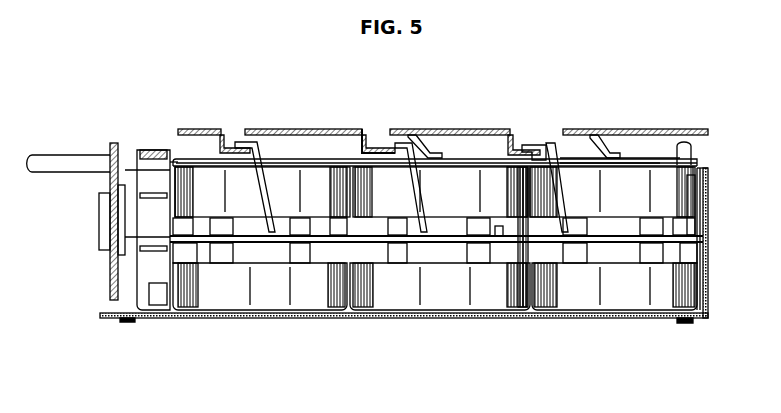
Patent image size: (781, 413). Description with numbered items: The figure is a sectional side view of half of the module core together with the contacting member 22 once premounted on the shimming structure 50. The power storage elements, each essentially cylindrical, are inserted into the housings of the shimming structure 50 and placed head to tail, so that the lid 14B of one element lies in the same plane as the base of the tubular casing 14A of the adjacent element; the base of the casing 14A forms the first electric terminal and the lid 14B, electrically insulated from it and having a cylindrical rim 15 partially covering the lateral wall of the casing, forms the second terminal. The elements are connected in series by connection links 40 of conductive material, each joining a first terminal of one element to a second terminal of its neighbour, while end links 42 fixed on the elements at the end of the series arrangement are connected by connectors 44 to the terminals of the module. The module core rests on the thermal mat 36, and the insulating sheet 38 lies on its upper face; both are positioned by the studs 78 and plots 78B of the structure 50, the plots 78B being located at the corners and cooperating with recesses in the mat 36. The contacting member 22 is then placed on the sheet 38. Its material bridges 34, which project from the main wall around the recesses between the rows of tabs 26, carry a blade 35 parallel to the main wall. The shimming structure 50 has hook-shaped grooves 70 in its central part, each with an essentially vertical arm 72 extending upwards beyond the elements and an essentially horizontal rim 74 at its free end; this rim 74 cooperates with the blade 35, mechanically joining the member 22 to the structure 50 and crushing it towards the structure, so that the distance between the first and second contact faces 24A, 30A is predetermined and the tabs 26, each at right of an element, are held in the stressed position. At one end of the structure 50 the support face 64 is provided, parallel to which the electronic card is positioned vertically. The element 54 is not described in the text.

The tubular casing 14A is at (437, 212).
The lid 14B is at (397, 285).
The cylindrical rim 15 is at (507, 292).
The contacting member 22 is at (441, 124).
The first contact face 24A is at (587, 126).
The tabs 26 is at (446, 155).
The second contact face 30A is at (608, 172).
The material bridges 34 is at (373, 137).
The blade 35 is at (240, 150).
The thermal mat 36 is at (116, 320).
The insulating sheet 38 is at (632, 157).
The connection links 40 is at (303, 156).
The end links 42 is at (118, 160).
The connectors 44 is at (68, 162).
The shimming structure 50 is at (706, 238).
The coil 54 is at (222, 255).
The support face 64 is at (165, 278).
The grooves 70 is at (268, 152).
The vertical arm 72 is at (556, 160).
The rim 74 is at (536, 150).
The studs 78 is at (693, 156).
The plots 78B is at (128, 324).